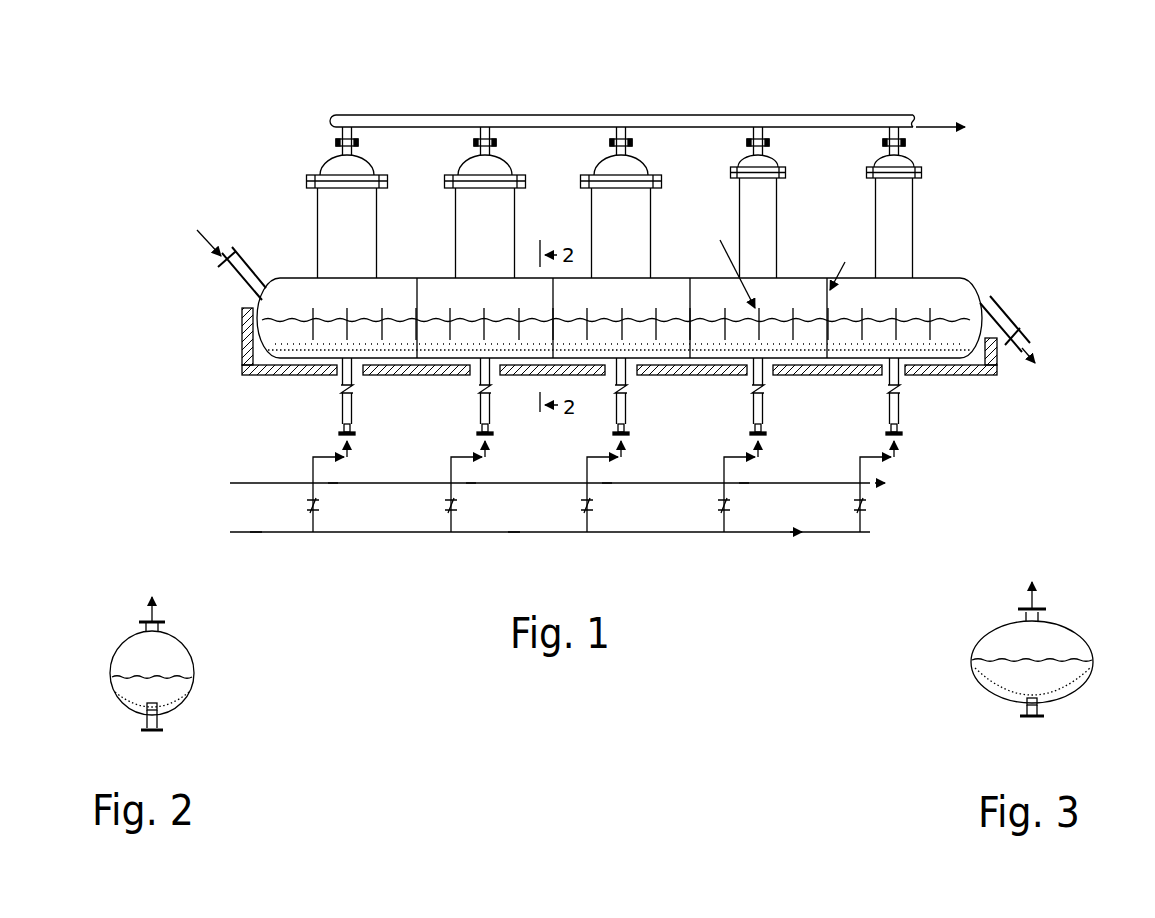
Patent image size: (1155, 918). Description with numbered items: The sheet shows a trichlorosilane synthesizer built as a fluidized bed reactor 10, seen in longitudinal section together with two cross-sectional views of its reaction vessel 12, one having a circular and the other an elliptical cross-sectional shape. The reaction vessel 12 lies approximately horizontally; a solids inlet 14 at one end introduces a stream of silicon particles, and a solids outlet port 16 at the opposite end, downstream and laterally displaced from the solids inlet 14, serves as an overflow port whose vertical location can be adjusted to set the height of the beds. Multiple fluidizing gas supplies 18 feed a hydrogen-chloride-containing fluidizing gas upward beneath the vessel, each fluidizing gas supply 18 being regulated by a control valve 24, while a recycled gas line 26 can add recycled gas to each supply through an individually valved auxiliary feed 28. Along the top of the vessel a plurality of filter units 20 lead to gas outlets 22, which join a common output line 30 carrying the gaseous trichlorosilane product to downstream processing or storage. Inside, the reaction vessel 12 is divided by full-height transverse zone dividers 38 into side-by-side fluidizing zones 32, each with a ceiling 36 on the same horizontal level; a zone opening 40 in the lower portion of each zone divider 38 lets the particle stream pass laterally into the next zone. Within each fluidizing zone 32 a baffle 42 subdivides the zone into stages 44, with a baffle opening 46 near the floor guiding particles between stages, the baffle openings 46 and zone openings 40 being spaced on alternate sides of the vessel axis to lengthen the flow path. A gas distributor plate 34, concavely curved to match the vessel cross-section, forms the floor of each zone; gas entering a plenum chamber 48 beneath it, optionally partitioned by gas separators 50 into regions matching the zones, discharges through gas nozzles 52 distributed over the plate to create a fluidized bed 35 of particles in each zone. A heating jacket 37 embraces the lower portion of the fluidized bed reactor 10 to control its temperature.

In FIG. 1, the fluidized bed reactor 10 is at (229, 154).
In FIG. 1, the reaction vessel 12 is at (276, 277).
In FIG. 1, the solids inlet 14 is at (242, 278).
In FIG. 1, the solids outlet port 16 is at (1002, 322).
In FIG. 1, the fluidizing gas supply 18 is at (352, 420).
In FIG. 2, the fluidizing gas supply 18 is at (158, 729).
In FIG. 1, the filter unit 20 is at (360, 223).
In FIG. 1, the gas outlet 22 is at (345, 148).
In FIG. 1, the control valve 24 is at (336, 389).
In FIG. 1, the recycled gas line 26 is at (290, 532).
In FIG. 1, the auxiliary feed 28 is at (312, 467).
In FIG. 1, the common output line 30 is at (813, 123).
In FIG. 1, the fluidizing zone 32 is at (437, 287).
In FIG. 1, the gas distributor plate 34 is at (940, 348).
In FIG. 2, the gas distributor plate 34 is at (168, 698).
In FIG. 3, the gas distributor plate 34 is at (997, 680).
In FIG. 1, the fluidized bed 35 is at (470, 327).
In FIG. 1, the ceiling 36 is at (313, 281).
In FIG. 1, the heating jacket 37 is at (239, 343).
In FIG. 1, the zone divider 38 is at (417, 288).
In FIG. 1, the zone opening 40 is at (410, 343).
In FIG. 1, the baffle 42 is at (653, 313).
In FIG. 1, the stage 44 is at (640, 314).
In FIG. 1, the baffle opening 46 is at (372, 343).
In FIG. 2, the baffle opening 46 is at (145, 709).
In FIG. 3, the baffle opening 46 is at (1040, 696).
In FIG. 1, the plenum chamber 48 is at (719, 357).
In FIG. 2, the plenum chamber 48 is at (165, 716).
In FIG. 3, the plenum chamber 48 is at (1006, 699).
In FIG. 1, the gas separator 50 is at (822, 358).
In FIG. 1, the gas nozzle 52 is at (870, 350).